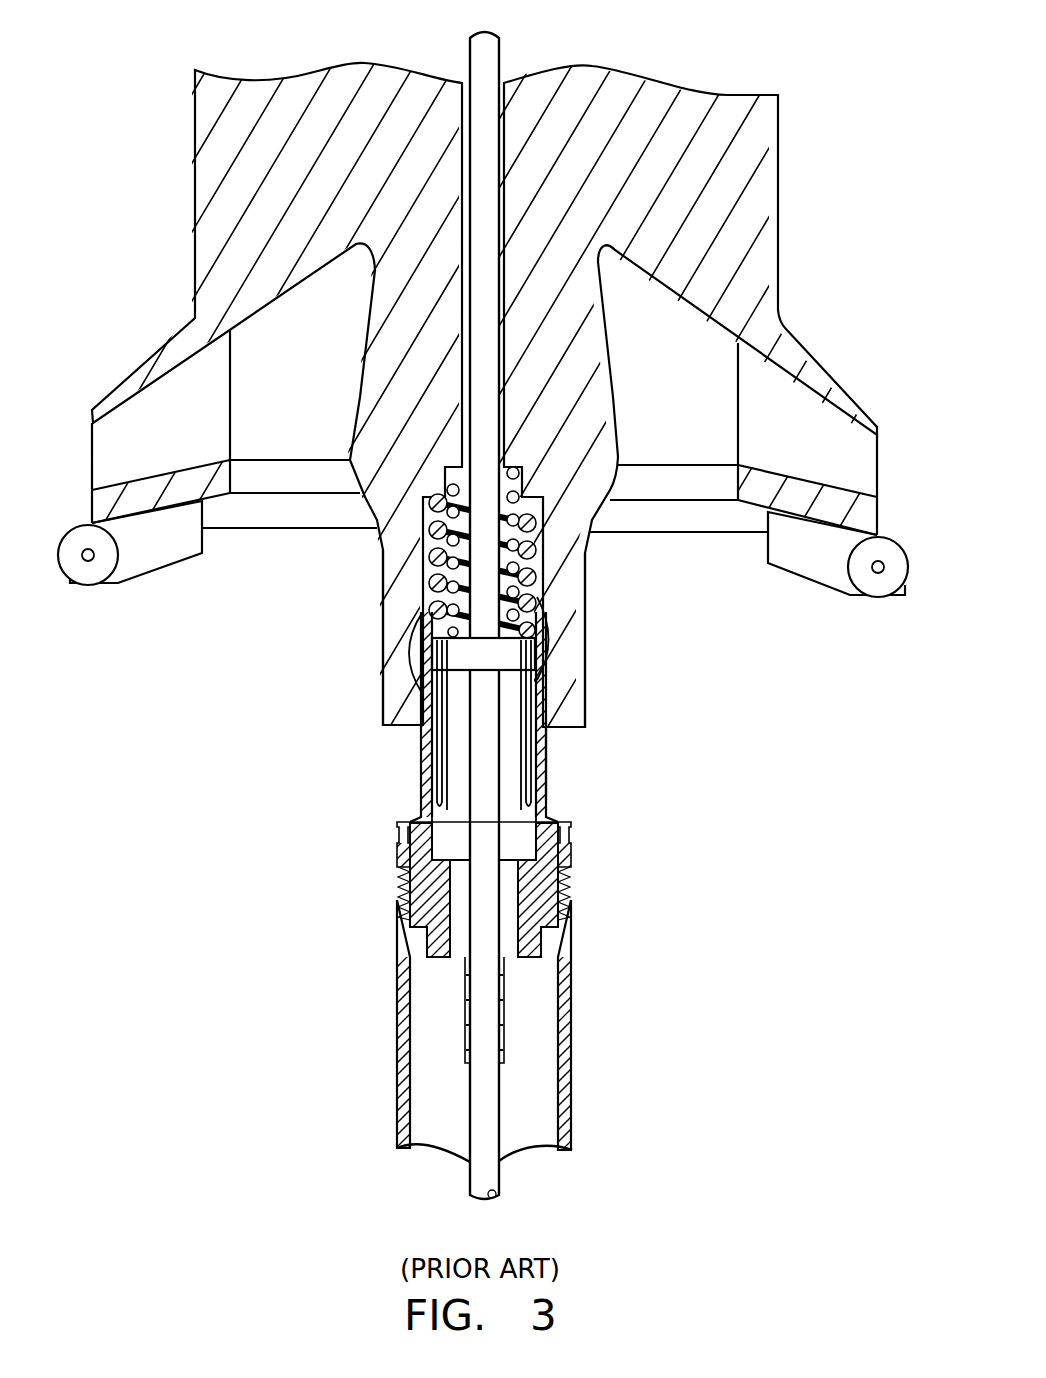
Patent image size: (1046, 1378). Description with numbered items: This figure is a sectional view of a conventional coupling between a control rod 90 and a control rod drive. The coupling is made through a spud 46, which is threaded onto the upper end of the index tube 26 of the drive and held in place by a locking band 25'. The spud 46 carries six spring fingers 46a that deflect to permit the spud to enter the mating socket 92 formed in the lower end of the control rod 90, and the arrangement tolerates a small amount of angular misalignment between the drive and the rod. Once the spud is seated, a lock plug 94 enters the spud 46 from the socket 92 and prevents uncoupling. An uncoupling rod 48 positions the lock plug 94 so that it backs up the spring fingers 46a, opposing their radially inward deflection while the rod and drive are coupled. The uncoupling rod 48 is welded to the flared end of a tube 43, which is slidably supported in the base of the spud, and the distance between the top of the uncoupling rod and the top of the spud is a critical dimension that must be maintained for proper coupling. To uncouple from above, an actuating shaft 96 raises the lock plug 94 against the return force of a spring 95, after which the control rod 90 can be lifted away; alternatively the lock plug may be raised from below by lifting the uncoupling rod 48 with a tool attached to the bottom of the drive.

The control rod 90 is at (777, 165).
The mating socket 92 is at (587, 643).
The lock plug 94 is at (440, 652).
The spring 95 is at (545, 592).
The actuating shaft 96 is at (502, 58).
The spud 46 is at (548, 780).
The spring fingers 46a is at (548, 757).
The uncoupling rod 48 is at (480, 782).
The locking band 25' is at (523, 880).
The tube 43 is at (468, 1057).
The index tube 26 is at (577, 1127).